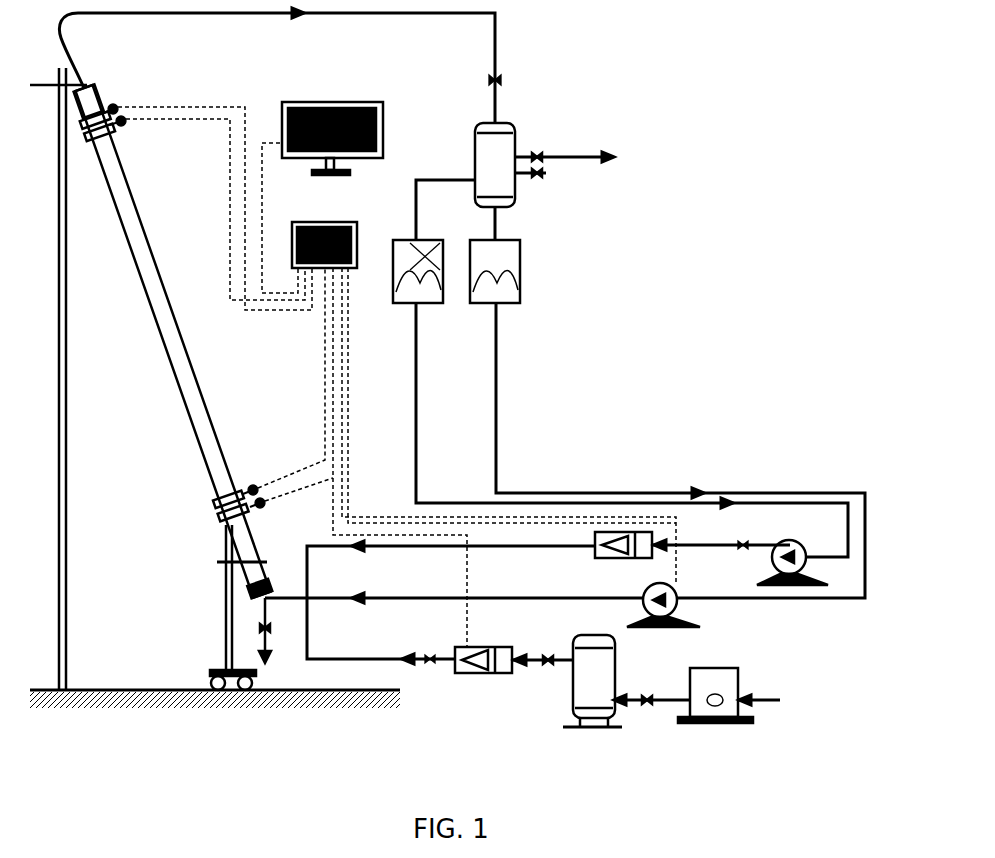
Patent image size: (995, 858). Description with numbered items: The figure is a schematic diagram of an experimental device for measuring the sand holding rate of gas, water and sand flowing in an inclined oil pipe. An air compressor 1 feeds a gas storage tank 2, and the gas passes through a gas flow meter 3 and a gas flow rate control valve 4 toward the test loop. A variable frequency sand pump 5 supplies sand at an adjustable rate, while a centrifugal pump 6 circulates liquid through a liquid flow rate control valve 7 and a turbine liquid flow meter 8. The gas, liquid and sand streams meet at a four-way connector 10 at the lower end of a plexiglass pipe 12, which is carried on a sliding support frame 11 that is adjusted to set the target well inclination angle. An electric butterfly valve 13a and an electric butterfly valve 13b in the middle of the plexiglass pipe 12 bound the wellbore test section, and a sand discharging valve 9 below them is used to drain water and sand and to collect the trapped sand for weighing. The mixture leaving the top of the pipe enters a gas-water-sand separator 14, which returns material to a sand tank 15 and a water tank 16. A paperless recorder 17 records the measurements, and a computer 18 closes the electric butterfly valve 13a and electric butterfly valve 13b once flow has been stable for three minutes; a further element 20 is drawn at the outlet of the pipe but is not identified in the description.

The air compressor 1 is at (724, 695).
The gas storage tank 2 is at (607, 681).
The gas flow meter 3 is at (504, 646).
The gas flow rate control valve 4 is at (428, 641).
The variable frequency sand pump 5 is at (663, 601).
The centrifugal pump 6 is at (801, 565).
The liquid flow rate control valve 7 is at (737, 559).
The turbine liquid flow meter 8 is at (623, 560).
The sand discharging valve 9 is at (256, 630).
The four-way connector 10 is at (454, 584).
The sliding support frame 11 is at (227, 607).
The plexiglass pipe 12 is at (173, 341).
The electric butterfly valve 13a is at (114, 106).
The electric butterfly valve 13b is at (251, 483).
The gas-water-sand separator 14 is at (512, 168).
The sand tank 15 is at (509, 289).
The water tank 16 is at (426, 289).
The paperless recorder 17 is at (314, 233).
The computer 18 is at (327, 124).
The outlet valve 20 is at (502, 85).